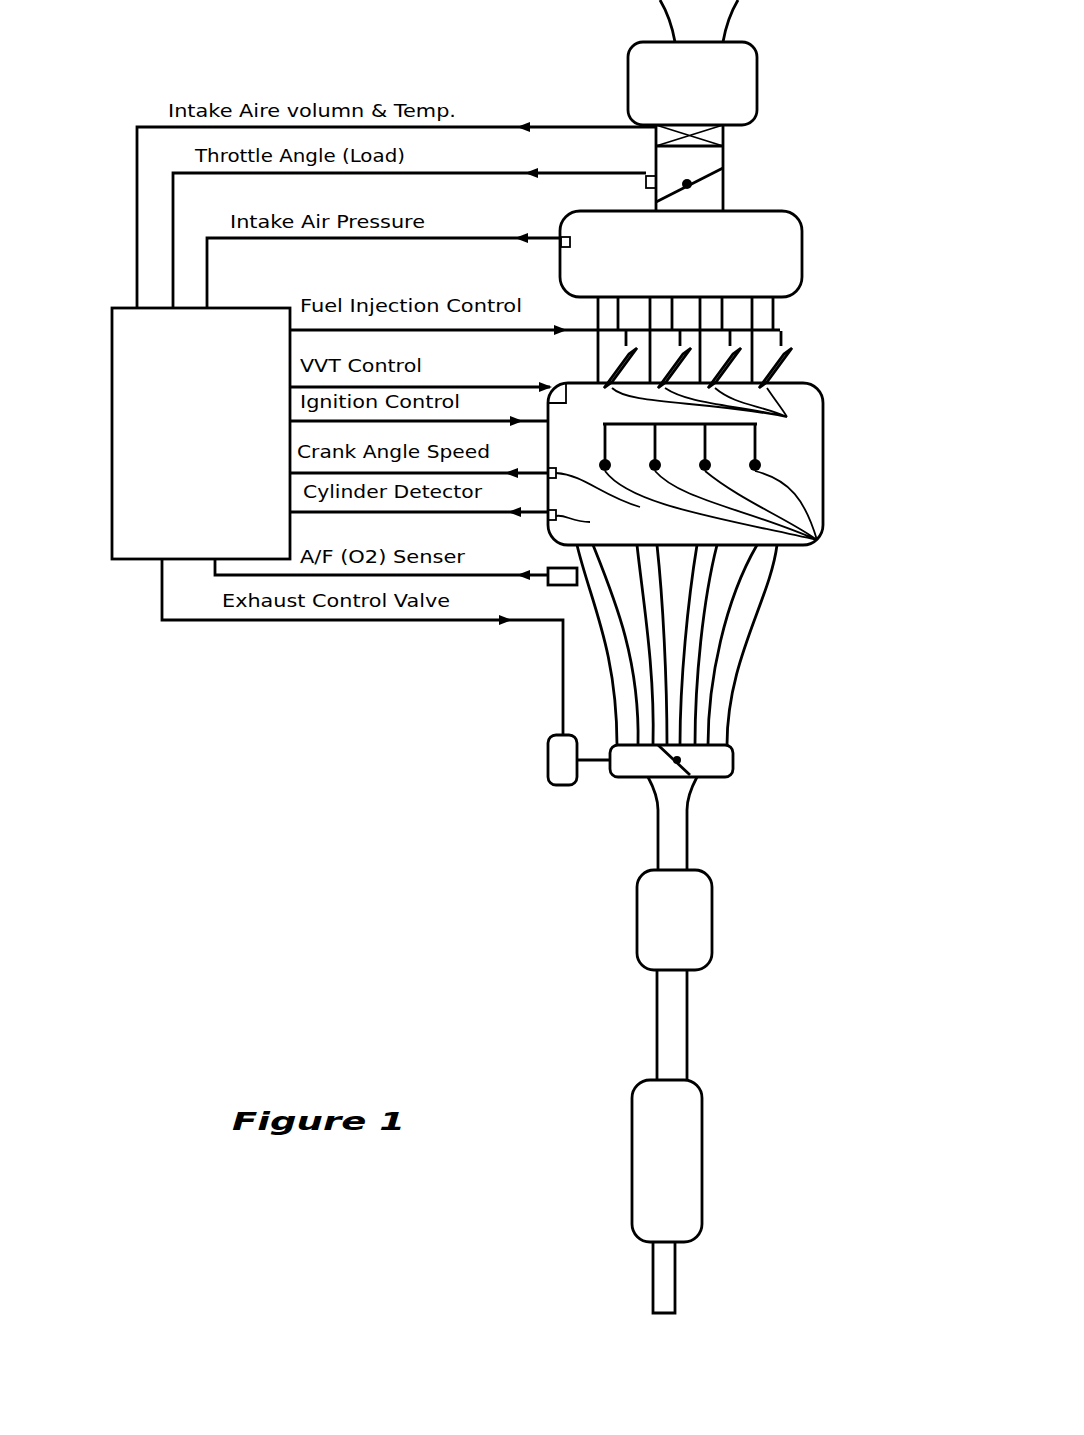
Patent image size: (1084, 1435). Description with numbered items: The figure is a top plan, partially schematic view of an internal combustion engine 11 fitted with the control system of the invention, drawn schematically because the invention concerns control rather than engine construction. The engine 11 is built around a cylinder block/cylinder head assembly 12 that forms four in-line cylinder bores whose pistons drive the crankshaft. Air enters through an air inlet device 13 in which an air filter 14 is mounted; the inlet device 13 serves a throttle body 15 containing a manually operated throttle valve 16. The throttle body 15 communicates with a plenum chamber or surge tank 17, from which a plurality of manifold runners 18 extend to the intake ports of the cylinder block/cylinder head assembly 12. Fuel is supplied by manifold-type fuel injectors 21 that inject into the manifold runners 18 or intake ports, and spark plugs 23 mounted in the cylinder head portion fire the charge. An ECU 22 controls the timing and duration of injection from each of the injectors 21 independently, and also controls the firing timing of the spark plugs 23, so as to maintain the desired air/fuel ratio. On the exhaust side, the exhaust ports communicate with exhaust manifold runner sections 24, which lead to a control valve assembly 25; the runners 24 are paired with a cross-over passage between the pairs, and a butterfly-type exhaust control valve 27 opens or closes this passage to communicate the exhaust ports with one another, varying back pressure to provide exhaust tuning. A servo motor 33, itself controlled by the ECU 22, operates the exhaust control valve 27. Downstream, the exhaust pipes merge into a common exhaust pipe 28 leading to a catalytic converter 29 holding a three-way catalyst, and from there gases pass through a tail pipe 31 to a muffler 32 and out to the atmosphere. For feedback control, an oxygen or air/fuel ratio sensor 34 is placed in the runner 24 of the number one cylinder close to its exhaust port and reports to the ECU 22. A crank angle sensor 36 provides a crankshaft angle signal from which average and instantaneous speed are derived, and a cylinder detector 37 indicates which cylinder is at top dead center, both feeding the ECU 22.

The internal combustion engine 11 is at (872, 546).
The cylinder block/cylinder head assembly 12 is at (823, 422).
The air inlet device 13 is at (758, 67).
The air filter 14 is at (723, 133).
The throttle body 15 is at (723, 153).
The throttle valve 16 is at (710, 177).
The plenum chamber or surge tank 17 is at (802, 257).
The manifold runners 18 is at (765, 318).
The fuel injectors 21 is at (710, 420).
The ECU 22 is at (132, 340).
The spark plugs 23 is at (817, 540).
The exhaust manifold runner sections 24 is at (630, 637).
The control valve assembly 25 is at (742, 770).
The exhaust control valve 27 is at (663, 757).
The common exhaust pipe 28 is at (687, 843).
The catalytic converter 29 is at (712, 930).
The tail pipe 31 is at (687, 1020).
The muffler 32 is at (702, 1164).
The servo motor 33 is at (548, 763).
The air/fuel ratio sensor 34 is at (565, 587).
The crank angle sensor 36 is at (622, 501).
The cylinder detector 37 is at (595, 525).